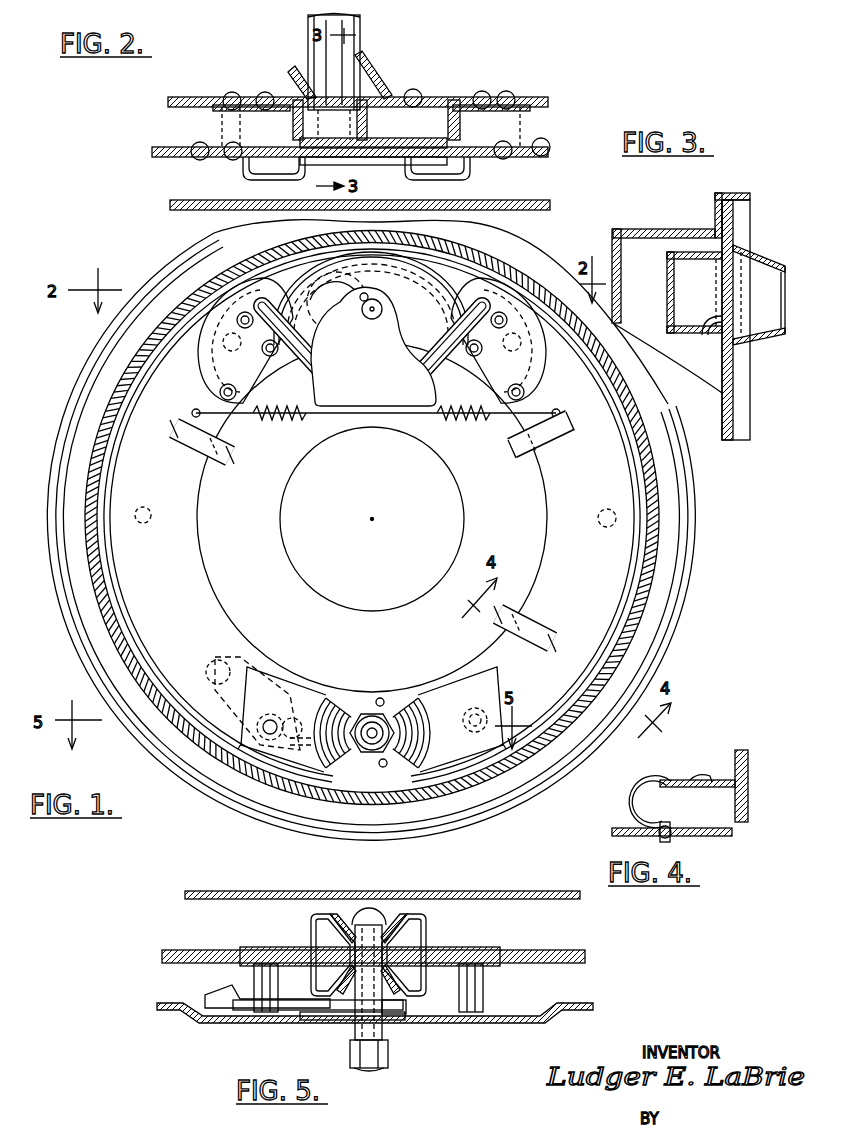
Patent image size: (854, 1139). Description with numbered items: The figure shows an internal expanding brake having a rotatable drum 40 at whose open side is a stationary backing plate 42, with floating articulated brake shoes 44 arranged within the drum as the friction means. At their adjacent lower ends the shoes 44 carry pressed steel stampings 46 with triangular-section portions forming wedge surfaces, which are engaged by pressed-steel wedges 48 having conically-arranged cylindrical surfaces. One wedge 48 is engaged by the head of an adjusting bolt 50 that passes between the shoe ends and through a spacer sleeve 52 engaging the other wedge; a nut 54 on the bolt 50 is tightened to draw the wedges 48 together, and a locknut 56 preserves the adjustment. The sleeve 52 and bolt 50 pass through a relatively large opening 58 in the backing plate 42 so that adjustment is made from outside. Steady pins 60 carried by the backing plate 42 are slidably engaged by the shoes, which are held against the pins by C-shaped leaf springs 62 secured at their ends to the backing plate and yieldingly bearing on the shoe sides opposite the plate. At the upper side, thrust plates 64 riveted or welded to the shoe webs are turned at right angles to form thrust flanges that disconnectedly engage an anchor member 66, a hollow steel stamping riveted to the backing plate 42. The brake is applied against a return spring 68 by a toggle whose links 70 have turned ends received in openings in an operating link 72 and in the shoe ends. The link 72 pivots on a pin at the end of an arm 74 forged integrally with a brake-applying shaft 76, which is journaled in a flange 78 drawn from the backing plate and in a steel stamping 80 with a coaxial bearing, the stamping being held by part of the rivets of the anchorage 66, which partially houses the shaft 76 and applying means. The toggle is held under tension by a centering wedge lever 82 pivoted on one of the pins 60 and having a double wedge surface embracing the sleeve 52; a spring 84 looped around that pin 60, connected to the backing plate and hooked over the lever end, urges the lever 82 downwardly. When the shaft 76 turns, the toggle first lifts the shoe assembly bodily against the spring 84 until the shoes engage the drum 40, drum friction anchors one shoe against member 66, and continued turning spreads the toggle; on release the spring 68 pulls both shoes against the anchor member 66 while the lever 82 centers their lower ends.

In FIG. 1, the rotatable drum 40 is at (647, 560).
In FIG. 2, the rotatable drum 40 is at (170, 200).
In FIG. 3, the rotatable drum 40 is at (634, 228).
In FIG. 5, the rotatable drum 40 is at (478, 891).
In FIG. 1, the backing plate 42 is at (60, 664).
In FIG. 2, the backing plate 42 is at (202, 97).
In FIG. 3, the backing plate 42 is at (738, 412).
In FIG. 4, the backing plate 42 is at (624, 827).
In FIG. 5, the backing plate 42 is at (572, 1003).
In FIG. 1, the brake shoes 44 is at (548, 489).
In FIG. 2, the brake shoes 44 is at (176, 146).
In FIG. 4, the brake shoes 44 is at (748, 770).
In FIG. 5, the brake shoes 44 is at (202, 950).
In FIG. 1, the pressed steel stampings 46 is at (286, 688).
In FIG. 5, the pressed steel stampings 46 is at (236, 954).
In FIG. 5, the pressed-steel wedges 48 is at (404, 914).
In FIG. 1, the adjusting bolt 50 is at (366, 716).
In FIG. 5, the adjusting bolt 50 is at (370, 910).
In FIG. 5, the spacer sleeve 52 is at (398, 1028).
In FIG. 5, the nut 54 is at (350, 1056).
In FIG. 5, the locknut 56 is at (386, 1068).
In FIG. 5, the opening 58 is at (352, 1018).
In FIG. 1, the steady pins 60 is at (160, 506).
In FIG. 5, the steady pins 60 is at (262, 977).
In FIG. 1, the C-shaped leaf springs 62 is at (192, 437).
In FIG. 4, the C-shaped leaf springs 62 is at (658, 772).
In FIG. 1, the thrust plates 64 is at (212, 363).
In FIG. 2, the thrust plates 64 is at (206, 158).
In FIG. 1, the anchor member 66 is at (432, 278).
In FIG. 2, the anchor member 66 is at (456, 98).
In FIG. 3, the anchor member 66 is at (686, 252).
In FIG. 1, the return spring 68 is at (280, 424).
In FIG. 1, the toggle links 70 is at (302, 370).
In FIG. 2, the toggle links 70 is at (262, 178).
In FIG. 1, the operating link 72 is at (373, 346).
In FIG. 2, the operating link 72 is at (384, 160).
In FIG. 1, the arm 74 is at (362, 306).
In FIG. 2, the arm 74 is at (364, 137).
In FIG. 2, the brake-applying shaft 76 is at (342, 70).
In FIG. 2, the flange 78 is at (298, 92).
In FIG. 3, the flange 78 is at (704, 320).
In FIG. 2, the steel stamping 80 is at (372, 82).
In FIG. 3, the steel stamping 80 is at (760, 266).
In FIG. 1, the centering wedge lever 82 is at (318, 697).
In FIG. 5, the centering wedge lever 82 is at (308, 1010).
In FIG. 1, the spring 84 is at (240, 658).
In FIG. 5, the spring 84 is at (262, 1006).